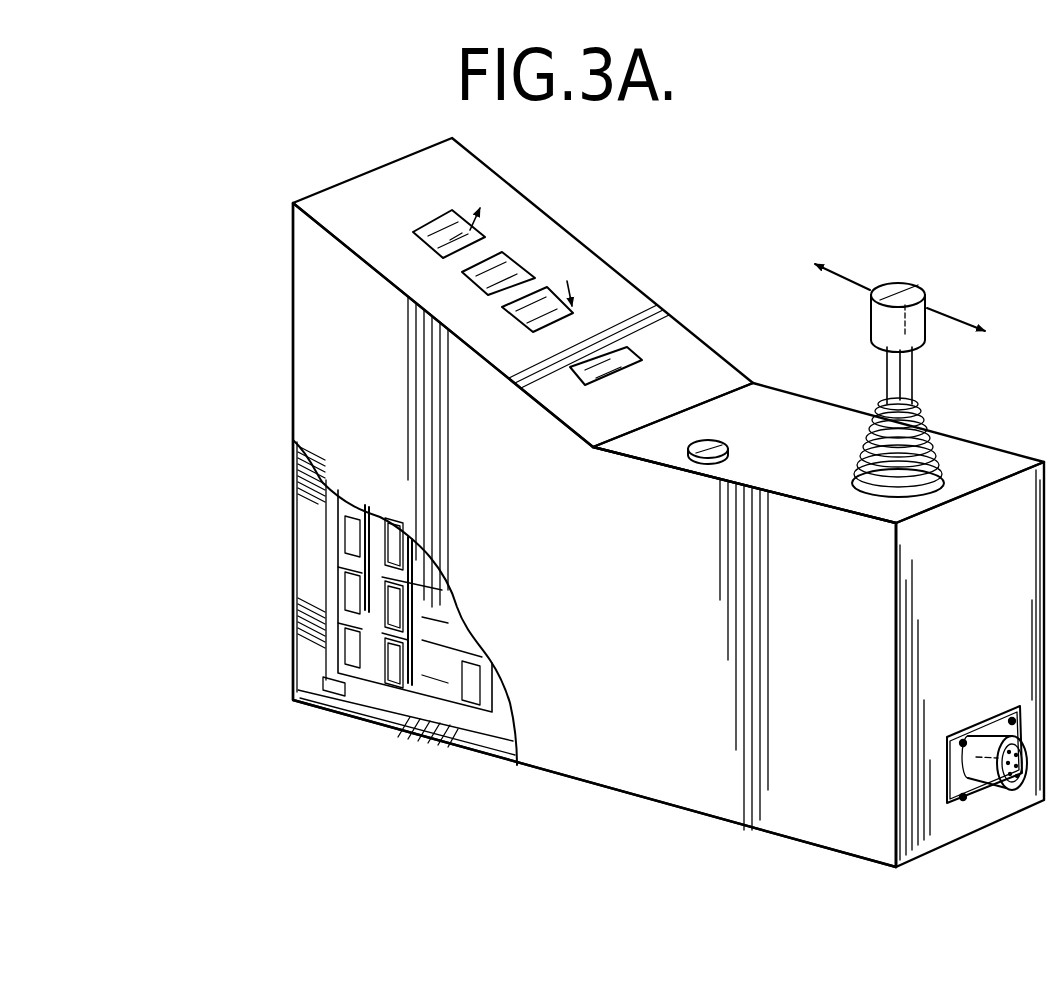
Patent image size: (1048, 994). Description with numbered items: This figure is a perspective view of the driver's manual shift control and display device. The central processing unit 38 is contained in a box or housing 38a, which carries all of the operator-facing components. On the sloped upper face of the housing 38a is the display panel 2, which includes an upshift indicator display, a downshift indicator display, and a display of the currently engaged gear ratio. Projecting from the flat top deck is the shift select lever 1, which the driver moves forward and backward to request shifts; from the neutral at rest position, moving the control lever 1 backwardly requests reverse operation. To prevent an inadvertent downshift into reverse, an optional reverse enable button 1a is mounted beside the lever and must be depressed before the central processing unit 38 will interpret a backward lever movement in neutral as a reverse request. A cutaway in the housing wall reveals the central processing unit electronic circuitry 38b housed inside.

The shift select lever 1 is at (897, 283).
The reverse enable button 1a is at (703, 462).
The display panel 2 is at (525, 228).
The central processing unit 38 is at (310, 568).
The housing 38a is at (605, 723).
The central processing unit electronic circuitry 38b is at (348, 597).